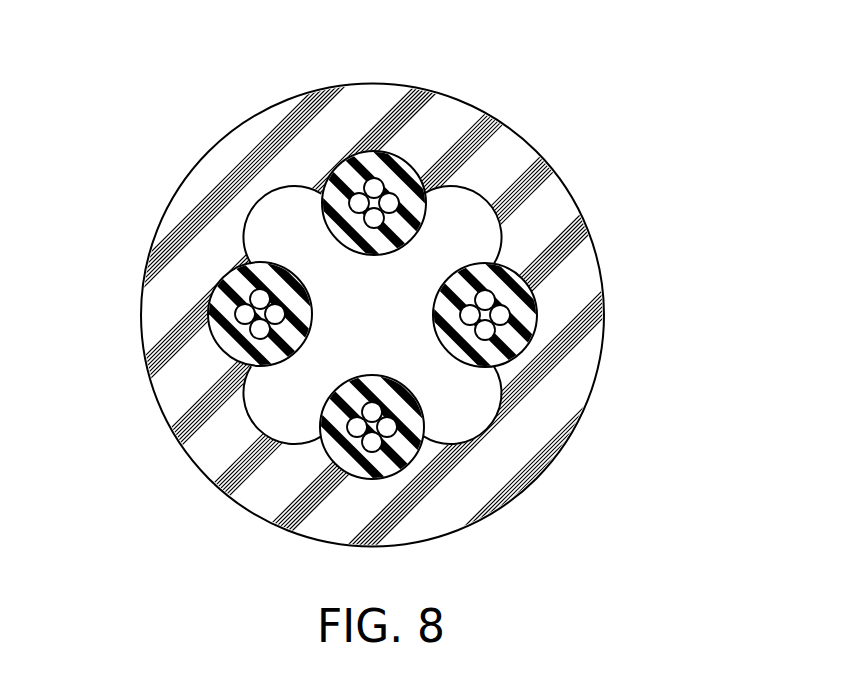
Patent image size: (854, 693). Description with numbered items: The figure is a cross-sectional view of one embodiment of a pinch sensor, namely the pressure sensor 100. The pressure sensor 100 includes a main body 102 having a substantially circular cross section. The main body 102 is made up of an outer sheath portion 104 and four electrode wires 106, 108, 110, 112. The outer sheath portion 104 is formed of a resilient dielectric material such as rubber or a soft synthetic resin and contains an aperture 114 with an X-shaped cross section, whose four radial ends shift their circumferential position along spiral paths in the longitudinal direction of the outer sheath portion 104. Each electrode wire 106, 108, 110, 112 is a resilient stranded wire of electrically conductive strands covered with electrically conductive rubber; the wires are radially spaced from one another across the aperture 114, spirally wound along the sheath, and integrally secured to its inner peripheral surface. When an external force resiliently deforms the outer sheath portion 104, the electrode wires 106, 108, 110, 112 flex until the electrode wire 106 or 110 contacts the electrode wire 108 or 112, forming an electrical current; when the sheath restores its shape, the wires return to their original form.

The pressure sensor 100 is at (165, 157).
The main body 102 is at (470, 101).
The outer sheath portion 104 is at (567, 188).
The electrode wire 106 is at (207, 287).
The electrode wire 108 is at (376, 138).
The electrode wire 110 is at (563, 290).
The electrode wire 112 is at (355, 485).
The aperture 114 is at (455, 398).